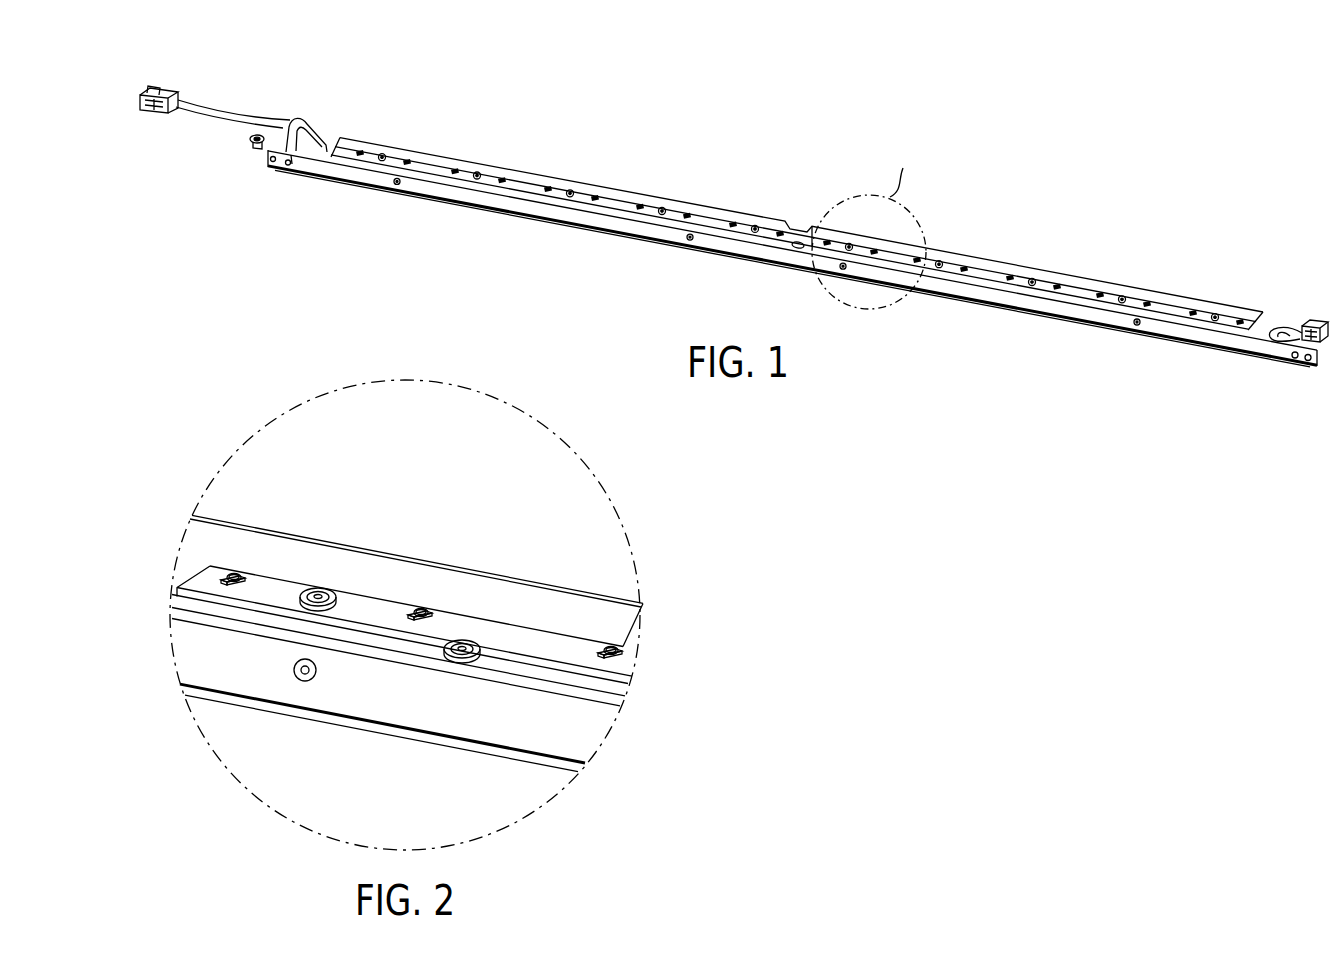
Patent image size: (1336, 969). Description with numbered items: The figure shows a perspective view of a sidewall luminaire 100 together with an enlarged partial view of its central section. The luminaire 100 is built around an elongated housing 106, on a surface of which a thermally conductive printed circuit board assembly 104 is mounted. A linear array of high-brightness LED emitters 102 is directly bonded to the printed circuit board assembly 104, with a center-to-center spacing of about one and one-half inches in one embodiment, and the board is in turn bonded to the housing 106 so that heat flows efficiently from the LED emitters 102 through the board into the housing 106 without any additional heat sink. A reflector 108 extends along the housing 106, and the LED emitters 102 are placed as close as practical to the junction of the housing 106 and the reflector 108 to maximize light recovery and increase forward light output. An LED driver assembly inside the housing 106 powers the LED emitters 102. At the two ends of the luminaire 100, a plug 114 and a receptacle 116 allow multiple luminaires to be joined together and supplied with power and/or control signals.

In FIG. 1, the sidewall luminaire 100 is at (1060, 133).
In FIG. 2, the HB LED emitters 102 is at (236, 573).
In FIG. 2, the printed circuit board assembly 104 is at (628, 665).
In FIG. 1, the housing 106 is at (1044, 313).
In FIG. 2, the housing 106 is at (598, 737).
In FIG. 1, the reflector 108 is at (543, 175).
In FIG. 2, the reflector 108 is at (393, 553).
In FIG. 1, the plug 114 is at (178, 93).
In FIG. 1, the receptacle 116 is at (1318, 320).